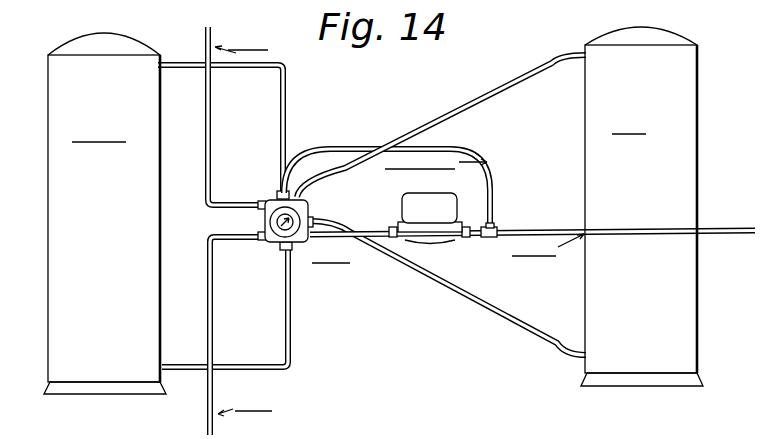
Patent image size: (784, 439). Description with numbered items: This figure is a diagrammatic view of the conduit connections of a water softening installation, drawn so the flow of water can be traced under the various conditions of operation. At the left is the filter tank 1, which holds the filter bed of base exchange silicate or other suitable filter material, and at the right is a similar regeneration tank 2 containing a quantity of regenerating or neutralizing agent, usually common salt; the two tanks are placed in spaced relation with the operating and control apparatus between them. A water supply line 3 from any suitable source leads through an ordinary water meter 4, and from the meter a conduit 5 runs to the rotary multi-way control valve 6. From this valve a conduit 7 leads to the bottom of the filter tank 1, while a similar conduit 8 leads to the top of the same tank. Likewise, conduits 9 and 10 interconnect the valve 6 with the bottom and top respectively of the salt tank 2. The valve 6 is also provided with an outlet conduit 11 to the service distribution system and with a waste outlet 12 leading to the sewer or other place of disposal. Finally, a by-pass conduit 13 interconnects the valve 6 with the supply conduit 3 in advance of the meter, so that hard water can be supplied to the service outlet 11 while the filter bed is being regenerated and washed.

The filter tank 1 is at (105, 213).
The regeneration tank 2 is at (642, 206).
The water supply line 3 is at (720, 228).
The water meter 4 is at (402, 203).
The conduit 5 is at (356, 239).
The rotary multi-way control valve 6 is at (305, 211).
The conduit 7 is at (293, 300).
The conduit 8 is at (235, 132).
The conduit 9 is at (462, 275).
The conduit 10 is at (471, 104).
The outlet conduit 11 is at (213, 137).
The waste outlet 12 is at (216, 313).
The by-pass conduit 13 is at (357, 151).